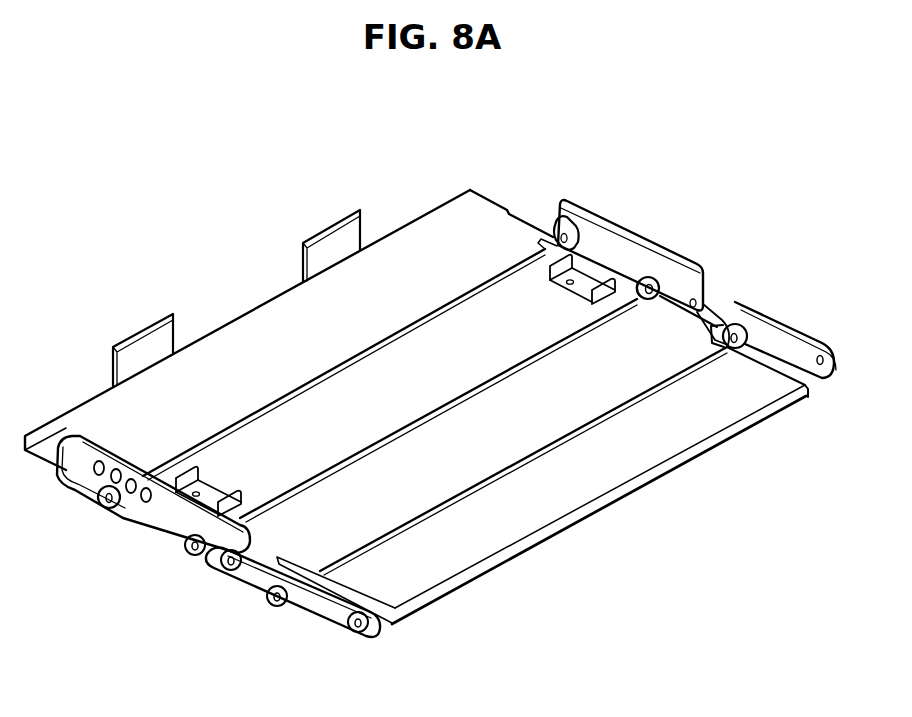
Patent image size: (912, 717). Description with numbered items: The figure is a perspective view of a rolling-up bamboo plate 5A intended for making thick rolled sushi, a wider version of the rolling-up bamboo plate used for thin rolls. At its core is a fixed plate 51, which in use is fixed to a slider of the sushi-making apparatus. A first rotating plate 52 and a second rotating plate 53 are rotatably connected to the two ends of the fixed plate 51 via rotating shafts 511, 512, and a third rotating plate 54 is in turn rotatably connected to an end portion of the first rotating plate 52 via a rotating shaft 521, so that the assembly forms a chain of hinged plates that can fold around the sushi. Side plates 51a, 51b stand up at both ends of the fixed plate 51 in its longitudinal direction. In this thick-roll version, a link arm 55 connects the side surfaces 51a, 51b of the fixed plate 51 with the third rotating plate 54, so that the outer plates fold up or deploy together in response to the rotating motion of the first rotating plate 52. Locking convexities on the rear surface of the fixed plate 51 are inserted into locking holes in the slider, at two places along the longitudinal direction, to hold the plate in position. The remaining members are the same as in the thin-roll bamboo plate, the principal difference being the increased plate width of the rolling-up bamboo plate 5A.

The rolling-up bamboo plate 5A is at (235, 259).
The fixed plate 51 is at (356, 388).
The side plate 51a is at (612, 240).
The side plate 51b is at (162, 513).
The rotating shaft 511 is at (634, 277).
The rotating shaft 512 is at (553, 230).
The first rotating plate 52 is at (473, 428).
The rotating shaft 521 is at (733, 325).
The second rotating plate 53 is at (432, 224).
The third rotating plate 54 is at (563, 493).
The link arm 55 is at (718, 296).